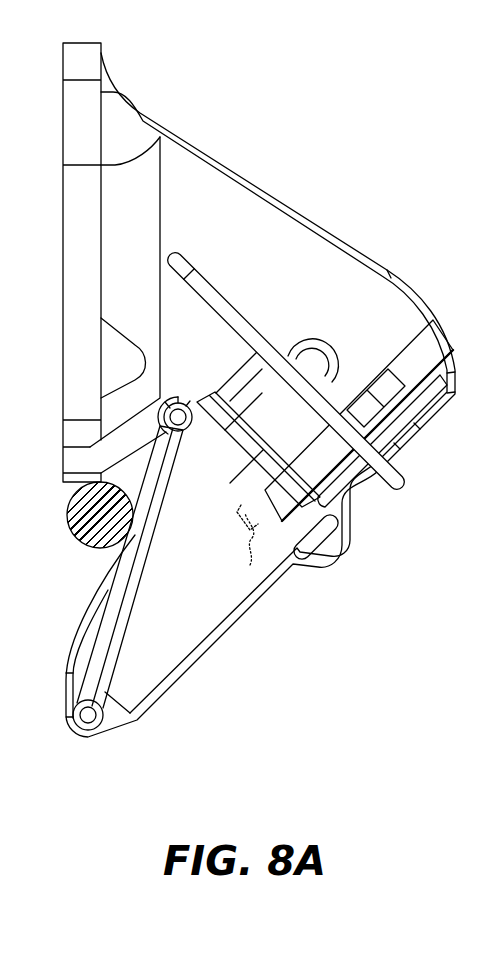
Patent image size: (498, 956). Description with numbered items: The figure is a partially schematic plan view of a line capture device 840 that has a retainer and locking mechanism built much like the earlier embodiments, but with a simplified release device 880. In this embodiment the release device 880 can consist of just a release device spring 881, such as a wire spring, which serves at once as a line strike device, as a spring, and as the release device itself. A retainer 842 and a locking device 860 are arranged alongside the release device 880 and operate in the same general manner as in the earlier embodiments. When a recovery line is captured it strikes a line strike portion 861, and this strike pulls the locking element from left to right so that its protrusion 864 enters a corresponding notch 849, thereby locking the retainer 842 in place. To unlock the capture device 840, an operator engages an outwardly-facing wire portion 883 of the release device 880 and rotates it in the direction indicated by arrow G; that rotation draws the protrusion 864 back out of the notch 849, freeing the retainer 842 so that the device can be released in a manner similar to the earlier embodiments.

The line capture device 840 is at (337, 151).
The retainer 842 is at (241, 620).
The notch 849 is at (308, 521).
The locking device 860 is at (270, 488).
The line strike portion 861 is at (283, 352).
The protrusion 864 is at (242, 560).
The release device 880 is at (341, 348).
The release device spring 881 is at (335, 378).
The outwardly-facing wire portion 883 is at (396, 470).
The arrow G is at (253, 316).